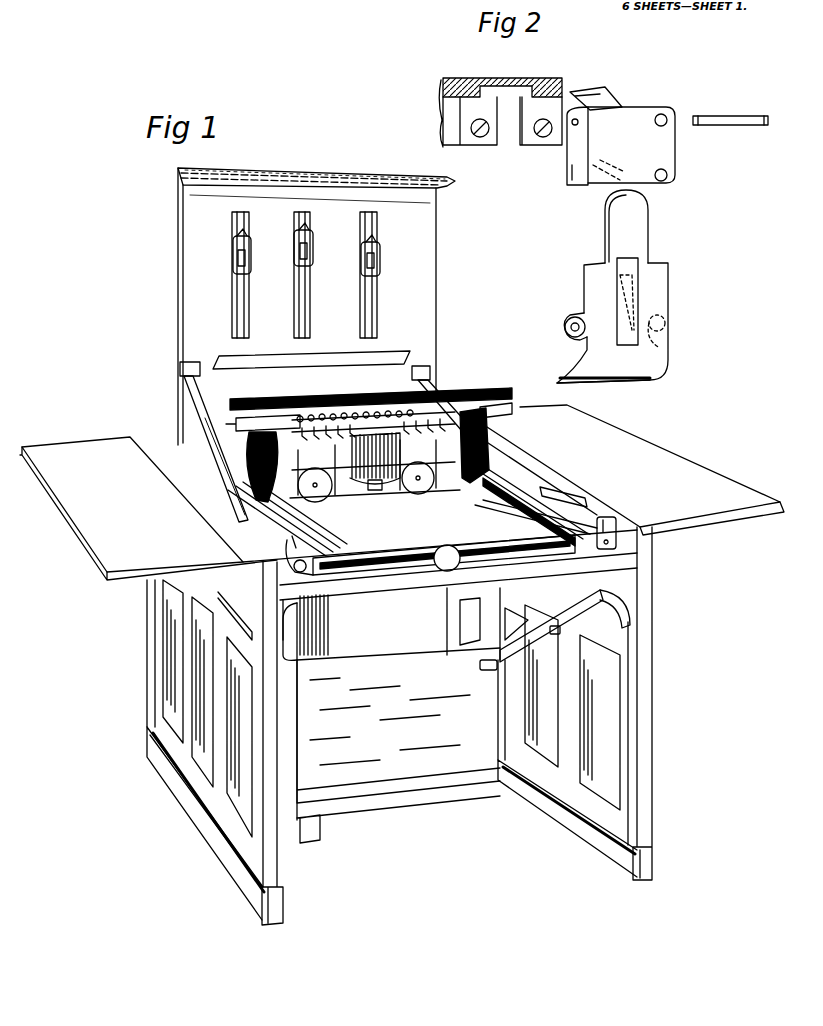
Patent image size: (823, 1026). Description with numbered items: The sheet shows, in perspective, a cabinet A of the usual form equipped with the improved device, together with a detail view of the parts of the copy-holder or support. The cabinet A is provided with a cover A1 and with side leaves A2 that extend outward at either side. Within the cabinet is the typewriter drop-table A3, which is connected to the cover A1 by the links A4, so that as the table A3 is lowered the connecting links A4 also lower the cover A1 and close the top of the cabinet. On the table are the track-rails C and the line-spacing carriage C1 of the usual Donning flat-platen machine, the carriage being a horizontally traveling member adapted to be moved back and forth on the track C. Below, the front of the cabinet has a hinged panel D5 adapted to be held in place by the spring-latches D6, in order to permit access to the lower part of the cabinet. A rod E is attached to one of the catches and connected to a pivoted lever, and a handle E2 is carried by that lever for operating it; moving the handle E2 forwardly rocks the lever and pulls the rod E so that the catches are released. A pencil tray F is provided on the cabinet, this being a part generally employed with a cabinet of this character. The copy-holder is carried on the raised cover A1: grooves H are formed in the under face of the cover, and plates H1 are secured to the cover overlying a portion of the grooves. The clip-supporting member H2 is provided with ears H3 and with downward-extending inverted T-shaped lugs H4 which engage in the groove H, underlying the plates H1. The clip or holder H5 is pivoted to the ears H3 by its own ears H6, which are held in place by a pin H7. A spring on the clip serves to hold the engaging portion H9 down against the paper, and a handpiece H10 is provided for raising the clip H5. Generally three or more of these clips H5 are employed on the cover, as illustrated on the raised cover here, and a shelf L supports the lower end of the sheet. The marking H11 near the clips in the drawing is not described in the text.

In FIG. 1, the cabinet A is at (650, 678).
In FIG. 1, the cover A1 is at (424, 307).
In FIG. 1, the side leaves A2 is at (105, 578).
In FIG. 1, the typewriter drop-table A3 is at (590, 558).
In FIG. 1, the links A4 is at (197, 402).
In FIG. 1, the track-rails C is at (262, 522).
In FIG. 1, the line-spacing carriage C1 is at (480, 394).
In FIG. 1, the hinged panel D5 is at (391, 723).
In FIG. 1, the spring-latches D6 is at (483, 667).
In FIG. 1, the rod E is at (470, 482).
In FIG. 1, the handle E2 is at (604, 515).
In FIG. 1, the pencil tray F is at (582, 497).
In FIG. 1, the shelf L is at (332, 364).
In FIG. 2, the grooves H is at (510, 88).
In FIG. 1, the plates H1 is at (246, 305).
In FIG. 2, the plates H1 is at (602, 66).
In FIG. 2, the clip-supporting member H2 is at (635, 127).
In FIG. 2, the ears H3 is at (582, 145).
In FIG. 2, the inverted T-shaped lugs H4 is at (617, 85).
In FIG. 1, the clip H5 is at (251, 256).
In FIG. 2, the clip H5 is at (620, 293).
In FIG. 2, the ears H6 is at (660, 317).
In FIG. 2, the pin H7 is at (743, 126).
In FIG. 2, the engaging portion H9 is at (607, 400).
In FIG. 2, the handpiece H10 is at (638, 215).
In FIG. 1, the slide top H11 is at (305, 233).